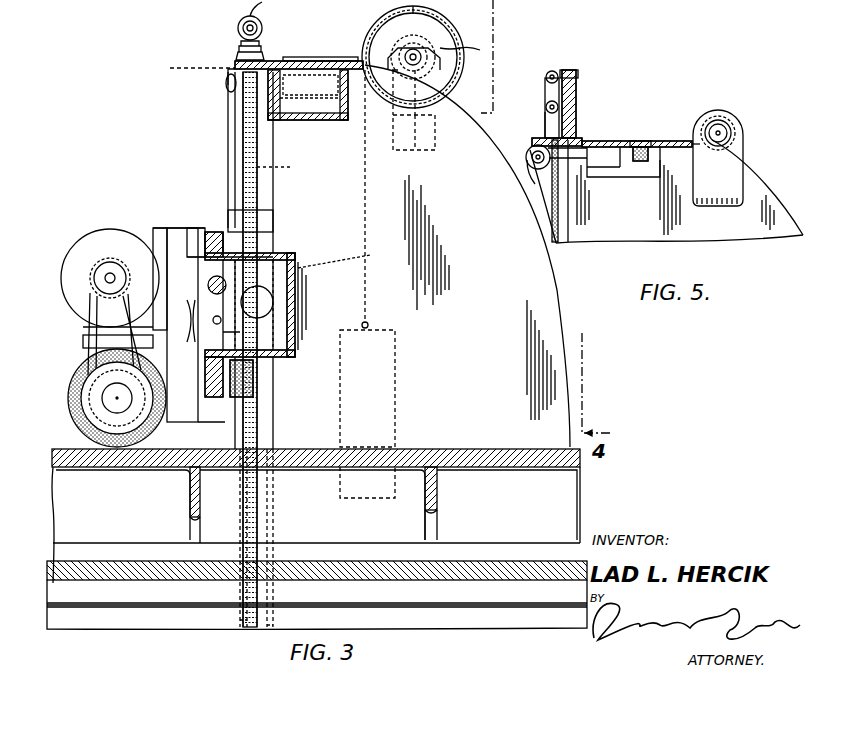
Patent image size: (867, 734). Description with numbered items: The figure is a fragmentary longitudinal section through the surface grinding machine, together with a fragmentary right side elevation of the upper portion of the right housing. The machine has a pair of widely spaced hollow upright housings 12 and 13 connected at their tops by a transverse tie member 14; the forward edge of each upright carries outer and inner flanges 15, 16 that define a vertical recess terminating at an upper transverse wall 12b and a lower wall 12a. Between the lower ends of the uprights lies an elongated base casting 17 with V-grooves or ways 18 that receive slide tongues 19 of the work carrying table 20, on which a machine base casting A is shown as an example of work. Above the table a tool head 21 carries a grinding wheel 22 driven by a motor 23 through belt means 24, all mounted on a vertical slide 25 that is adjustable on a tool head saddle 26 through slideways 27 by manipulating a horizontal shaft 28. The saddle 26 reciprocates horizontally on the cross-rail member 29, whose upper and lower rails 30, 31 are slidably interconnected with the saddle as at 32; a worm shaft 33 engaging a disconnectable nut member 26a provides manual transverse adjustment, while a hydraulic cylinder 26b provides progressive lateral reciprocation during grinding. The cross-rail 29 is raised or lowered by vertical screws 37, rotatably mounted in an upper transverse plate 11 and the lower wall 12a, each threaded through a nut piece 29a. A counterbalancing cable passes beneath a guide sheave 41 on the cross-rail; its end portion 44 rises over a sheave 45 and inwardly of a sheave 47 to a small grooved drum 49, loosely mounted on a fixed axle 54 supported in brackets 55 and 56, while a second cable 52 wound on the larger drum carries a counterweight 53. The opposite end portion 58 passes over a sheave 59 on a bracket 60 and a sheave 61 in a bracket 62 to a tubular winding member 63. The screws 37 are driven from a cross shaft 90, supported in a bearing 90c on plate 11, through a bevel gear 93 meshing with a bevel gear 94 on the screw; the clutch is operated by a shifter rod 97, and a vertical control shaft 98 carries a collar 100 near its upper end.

In FIG. 3, the upper transverse plate 11 is at (237, 60).
In FIG. 5, the upper transverse plate 11 is at (532, 138).
In FIG. 3, the upright housing 12 is at (557, 388).
In FIG. 3, the lower wall 12a is at (240, 625).
In FIG. 3, the upper transverse wall 12b is at (188, 63).
In FIG. 3, the upright housing 13 is at (233, 8).
In FIG. 5, the upright housing 13 is at (760, 240).
In FIG. 3, the transverse tie member 14 is at (292, 120).
In FIG. 5, the outer way or flange 15 is at (563, 243).
In FIG. 3, the inner way or flange 16 is at (245, 142).
In FIG. 3, the base casting 17 is at (444, 628).
In FIG. 3, the V-grooves or ways 18 is at (471, 606).
In FIG. 3, the slide tongues 19 is at (412, 607).
In FIG. 3, the work carrying table 20 is at (365, 562).
In FIG. 3, the tool head 21 is at (84, 224).
In FIG. 3, the grinding wheel 22 is at (72, 410).
In FIG. 3, the motor 23 is at (77, 254).
In FIG. 3, the belt means 24 is at (85, 327).
In FIG. 3, the vertical slide 25 is at (180, 238).
In FIG. 3, the tool head saddle 26 is at (201, 232).
In FIG. 3, the disconnectable nut member 26a is at (270, 352).
In FIG. 3, the cylinder 26b is at (226, 285).
In FIG. 3, the slideways 27 is at (188, 235).
In FIG. 3, the horizontal shaft 28 is at (217, 305).
In FIG. 3, the cross-rail member 29 is at (298, 262).
In FIG. 3, the nut piece 29a is at (350, 254).
In FIG. 3, the upper rail 30 is at (260, 242).
In FIG. 3, the lower rail 31 is at (240, 380).
In FIG. 3, the sliding interconnection 32 is at (210, 233).
In FIG. 3, the worm shaft 33 is at (221, 322).
In FIG. 3, the worm shaft or screw 37 is at (283, 173).
In FIG. 3, the idle supporting and guide sheave 41 is at (260, 218).
In FIG. 3, the end portion of the cable 44 is at (228, 115).
In FIG. 3, the sheave 45 is at (225, 89).
In FIG. 3, the sheave 47 is at (333, 60).
In FIG. 3, the grooved drum 49 is at (449, 34).
In FIG. 3, the second cable 52 is at (365, 184).
In FIG. 3, the counterweight 53 is at (395, 388).
In FIG. 3, the shaft or axle 54 is at (393, 56).
In FIG. 3, the bracket 55 is at (437, 133).
In FIG. 3, the bracket 56 is at (480, 52).
In FIG. 5, the opposite end portion of the cable 58 is at (619, 140).
In FIG. 5, the sheave 59 is at (545, 165).
In FIG. 5, the bracket 60 is at (592, 168).
In FIG. 5, the sheave 61 is at (643, 142).
In FIG. 5, the bracket 62 is at (645, 164).
In FIG. 5, the tubular winding member or drum 63 is at (732, 124).
In FIG. 5, the cross shaft 90 is at (546, 106).
In FIG. 5, the bearing 90c is at (546, 124).
In FIG. 3, the bevel gear 93 is at (238, 29).
In FIG. 3, the bevel gear 94 is at (265, 42).
In FIG. 5, the shifter rod 97 is at (552, 70).
In FIG. 5, the vertical control shaft 98 is at (575, 243).
In FIG. 5, the collar 100 is at (578, 73).
In FIG. 3, the machine base casting A is at (454, 446).